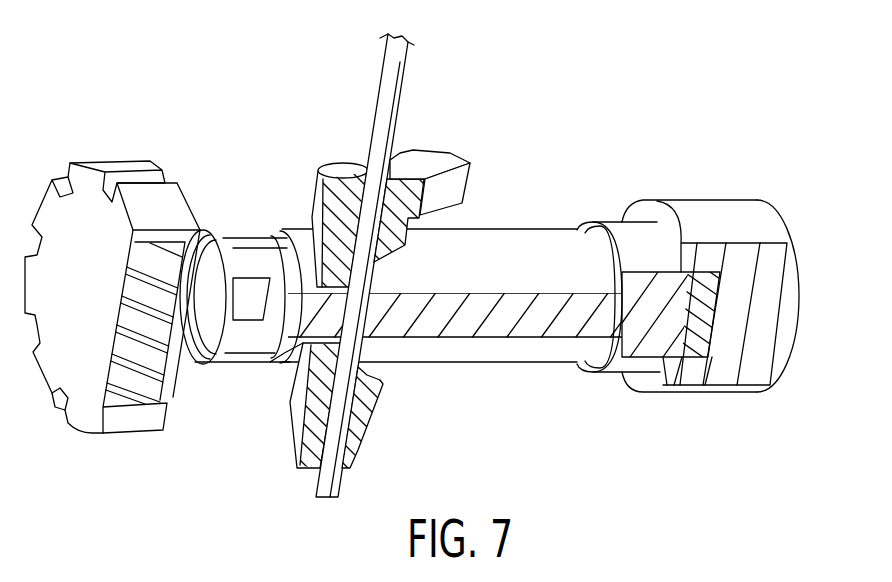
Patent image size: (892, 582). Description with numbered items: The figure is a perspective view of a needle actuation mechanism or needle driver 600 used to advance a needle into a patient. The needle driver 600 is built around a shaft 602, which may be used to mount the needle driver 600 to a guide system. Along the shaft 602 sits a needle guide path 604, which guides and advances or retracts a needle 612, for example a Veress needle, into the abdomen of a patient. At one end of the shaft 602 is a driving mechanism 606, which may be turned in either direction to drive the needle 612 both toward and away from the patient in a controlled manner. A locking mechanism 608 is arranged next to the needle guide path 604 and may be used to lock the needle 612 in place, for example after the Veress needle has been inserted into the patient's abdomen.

The needle driver 600 is at (399, 267).
The shaft 602 is at (528, 252).
The needle guide path 604 is at (370, 204).
The driving mechanism 606 is at (78, 320).
The locking mechanism 608 is at (430, 163).
The needle 612 is at (388, 90).